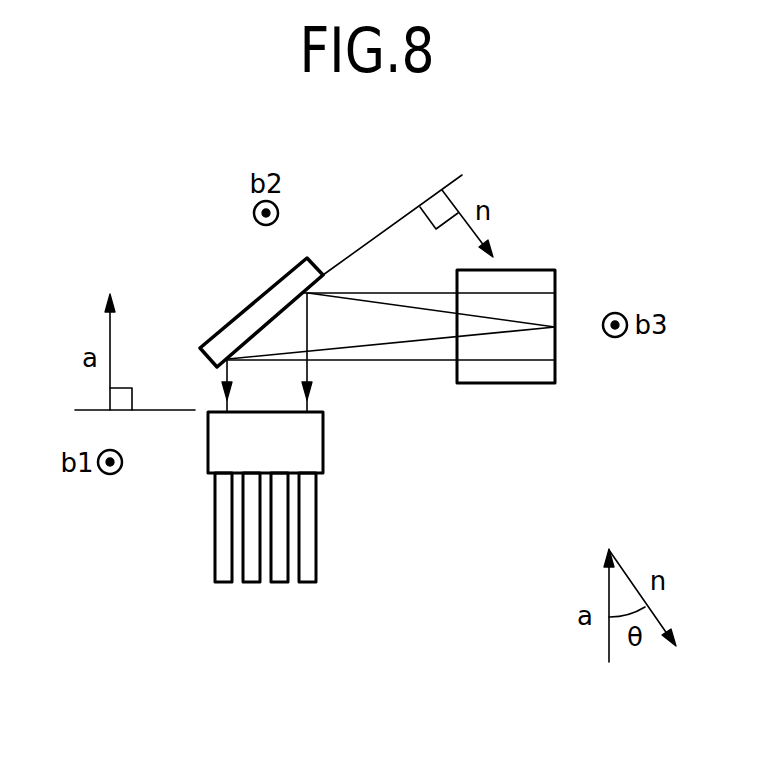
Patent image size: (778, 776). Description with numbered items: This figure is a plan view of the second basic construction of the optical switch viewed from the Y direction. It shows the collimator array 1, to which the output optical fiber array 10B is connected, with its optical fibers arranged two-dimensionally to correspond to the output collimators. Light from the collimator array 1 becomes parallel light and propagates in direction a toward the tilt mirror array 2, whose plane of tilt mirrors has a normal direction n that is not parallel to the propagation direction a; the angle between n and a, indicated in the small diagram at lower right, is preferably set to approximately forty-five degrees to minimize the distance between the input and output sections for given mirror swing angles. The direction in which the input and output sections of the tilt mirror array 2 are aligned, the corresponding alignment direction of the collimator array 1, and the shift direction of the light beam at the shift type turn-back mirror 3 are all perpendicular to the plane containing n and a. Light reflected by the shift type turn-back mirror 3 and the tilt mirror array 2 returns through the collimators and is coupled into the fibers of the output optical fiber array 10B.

The collimator array 1 is at (323, 442).
The tilt mirror array 2 is at (253, 297).
The shift type turn-back mirror 3 is at (555, 278).
The output optical fiber array 10B is at (215, 606).